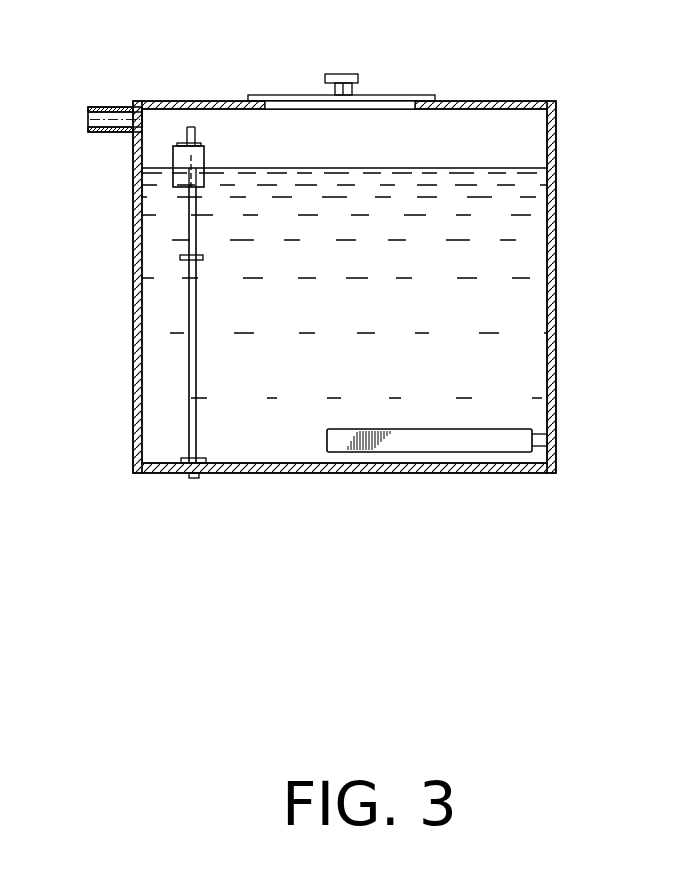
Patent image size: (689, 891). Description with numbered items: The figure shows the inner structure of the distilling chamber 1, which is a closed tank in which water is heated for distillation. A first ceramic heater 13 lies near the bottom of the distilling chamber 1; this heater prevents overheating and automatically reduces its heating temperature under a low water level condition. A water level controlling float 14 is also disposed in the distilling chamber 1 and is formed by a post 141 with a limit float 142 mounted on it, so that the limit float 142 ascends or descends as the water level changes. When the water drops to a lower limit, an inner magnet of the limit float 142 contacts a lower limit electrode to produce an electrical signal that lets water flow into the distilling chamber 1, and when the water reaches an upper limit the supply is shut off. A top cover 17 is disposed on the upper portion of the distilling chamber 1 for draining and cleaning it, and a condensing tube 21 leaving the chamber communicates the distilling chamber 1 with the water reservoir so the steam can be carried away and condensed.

The distilling chamber 1 is at (556, 213).
The first ceramic heater 13 is at (490, 440).
The water level controlling float 14 is at (172, 302).
The post 141 is at (190, 302).
The limit float 142 is at (180, 172).
The top cover 17 is at (343, 77).
The condensing tube 21 is at (107, 107).